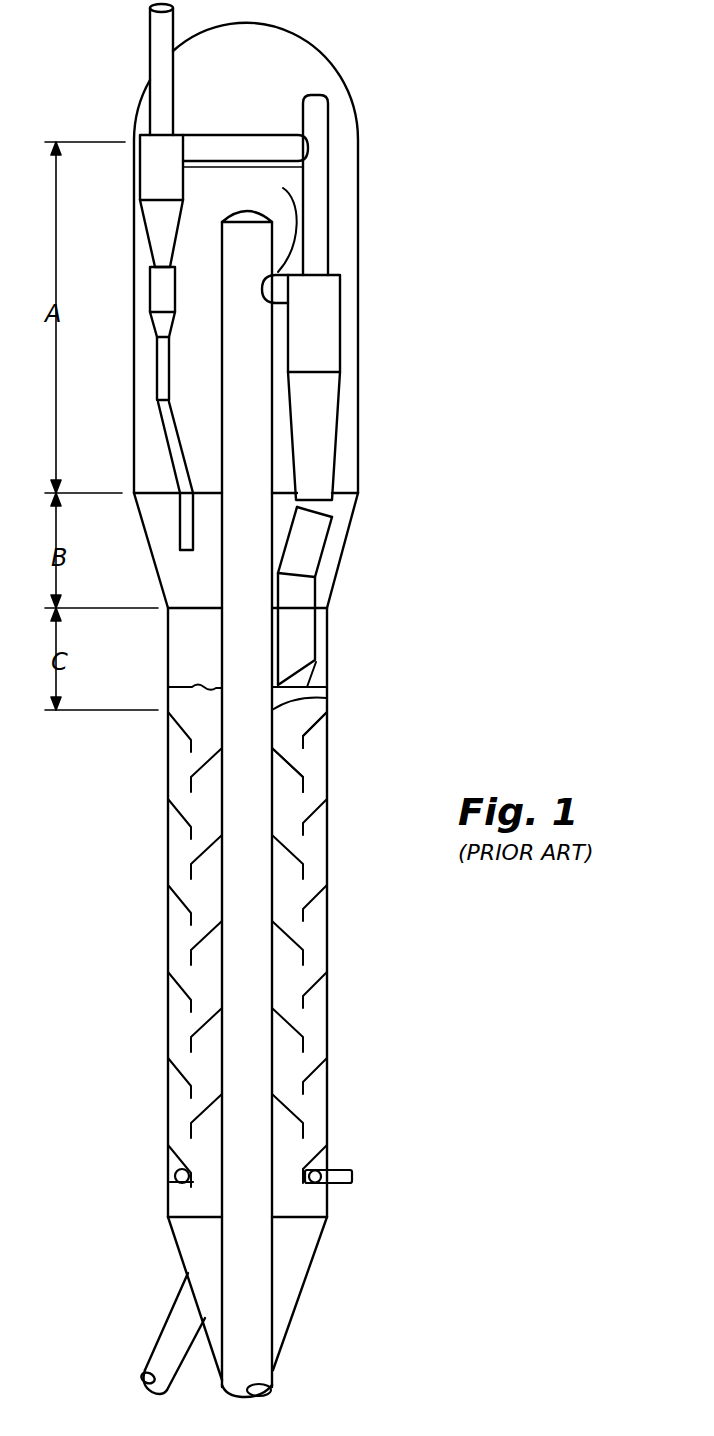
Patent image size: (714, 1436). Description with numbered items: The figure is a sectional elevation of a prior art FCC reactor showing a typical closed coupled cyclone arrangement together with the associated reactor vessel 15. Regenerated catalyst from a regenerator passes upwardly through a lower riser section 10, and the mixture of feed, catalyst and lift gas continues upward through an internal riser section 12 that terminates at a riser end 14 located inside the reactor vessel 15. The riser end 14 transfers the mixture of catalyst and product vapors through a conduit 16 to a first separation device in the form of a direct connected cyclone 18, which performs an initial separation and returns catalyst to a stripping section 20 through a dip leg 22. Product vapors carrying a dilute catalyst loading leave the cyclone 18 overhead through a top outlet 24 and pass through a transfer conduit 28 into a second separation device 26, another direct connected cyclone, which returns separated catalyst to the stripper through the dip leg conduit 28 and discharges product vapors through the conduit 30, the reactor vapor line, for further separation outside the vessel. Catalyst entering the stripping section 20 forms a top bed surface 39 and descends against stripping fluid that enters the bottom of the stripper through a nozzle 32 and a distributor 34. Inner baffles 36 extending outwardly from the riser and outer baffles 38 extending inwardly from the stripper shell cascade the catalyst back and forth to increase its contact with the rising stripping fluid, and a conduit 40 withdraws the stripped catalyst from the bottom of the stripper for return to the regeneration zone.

The lower riser section 10 is at (275, 1376).
The internal riser section 12 is at (327, 700).
The riser end 14 is at (240, 212).
The reactor vessel 15 is at (359, 198).
The conduit 16 is at (276, 222).
The direct connected cyclone 18 is at (342, 312).
The stripping section 20 is at (327, 832).
The dip leg 22 is at (322, 627).
The top outlet 24 is at (330, 233).
The second separation device 26 is at (162, 227).
The transfer conduit 28 is at (209, 135).
The reactor vapor line 30 is at (150, 40).
The nozzle 32 is at (345, 1170).
The distributor 34 is at (176, 1181).
The inner baffles 36 is at (303, 773).
The outer baffles 38 is at (308, 724).
The top bed surface 39 is at (318, 667).
The conduit 40 is at (152, 1352).